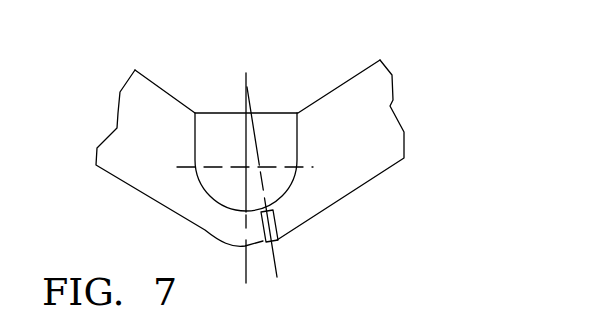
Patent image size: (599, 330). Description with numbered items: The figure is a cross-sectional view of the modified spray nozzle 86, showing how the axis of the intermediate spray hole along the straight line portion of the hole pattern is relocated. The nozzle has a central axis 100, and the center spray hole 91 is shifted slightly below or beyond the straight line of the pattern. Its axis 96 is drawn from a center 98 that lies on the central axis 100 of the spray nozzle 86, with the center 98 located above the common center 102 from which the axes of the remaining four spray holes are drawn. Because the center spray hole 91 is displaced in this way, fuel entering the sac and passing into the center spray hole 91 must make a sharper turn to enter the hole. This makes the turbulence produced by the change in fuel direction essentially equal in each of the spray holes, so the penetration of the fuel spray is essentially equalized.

The spray nozzle 86 is at (418, 108).
The center spray hole 91 is at (278, 223).
The axis 96 is at (278, 253).
The center 98 is at (251, 88).
The central axis 100 is at (244, 148).
The common center 102 is at (246, 168).